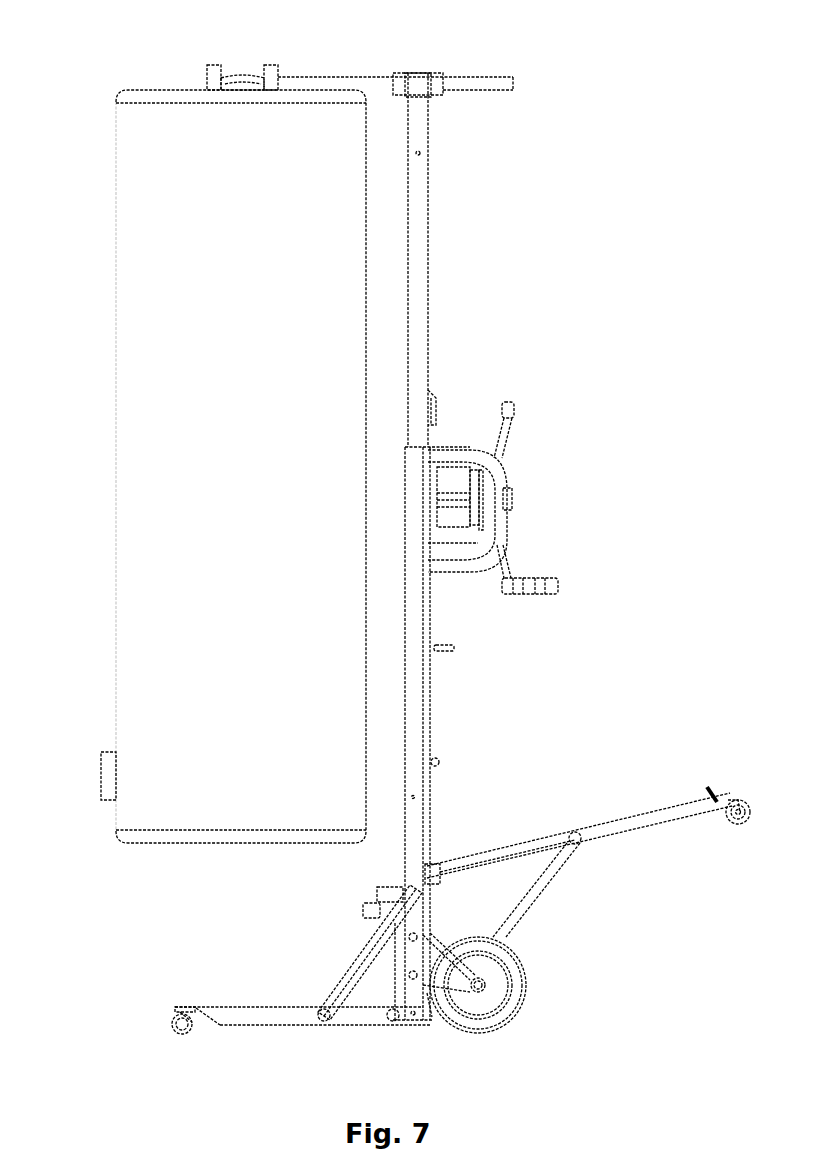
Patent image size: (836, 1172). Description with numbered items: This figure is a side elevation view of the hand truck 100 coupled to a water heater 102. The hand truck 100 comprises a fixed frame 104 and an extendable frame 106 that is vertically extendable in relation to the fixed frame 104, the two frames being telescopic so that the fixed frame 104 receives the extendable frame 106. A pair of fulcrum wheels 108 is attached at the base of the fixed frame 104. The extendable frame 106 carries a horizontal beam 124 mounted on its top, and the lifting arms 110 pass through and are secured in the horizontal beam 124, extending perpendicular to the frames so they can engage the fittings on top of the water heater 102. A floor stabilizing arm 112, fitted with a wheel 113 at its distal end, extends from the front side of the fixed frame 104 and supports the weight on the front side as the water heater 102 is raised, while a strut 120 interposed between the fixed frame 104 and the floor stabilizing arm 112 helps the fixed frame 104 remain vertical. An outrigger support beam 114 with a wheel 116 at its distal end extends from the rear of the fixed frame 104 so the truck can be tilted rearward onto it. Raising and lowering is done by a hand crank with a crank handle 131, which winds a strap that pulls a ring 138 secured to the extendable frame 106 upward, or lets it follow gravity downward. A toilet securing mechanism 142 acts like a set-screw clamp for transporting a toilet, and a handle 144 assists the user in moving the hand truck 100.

The hand truck 100 is at (603, 171).
The water heater 102 is at (133, 385).
The fixed frame 104 is at (422, 697).
The extendable frame 106 is at (420, 290).
The fulcrum wheels 108 is at (515, 958).
The lifting arms 110 is at (311, 85).
The floor stabilizing arm 112 is at (270, 1021).
The wheel 113 is at (176, 1030).
The outrigger support beam 114 is at (604, 826).
The wheel 116 is at (735, 826).
The strut 120 is at (366, 970).
The horizontal beam 124 is at (420, 83).
The crank handle 131 is at (543, 577).
The ring 138 is at (452, 648).
The toilet securing mechanism 142 is at (368, 905).
The handle 144 is at (500, 472).